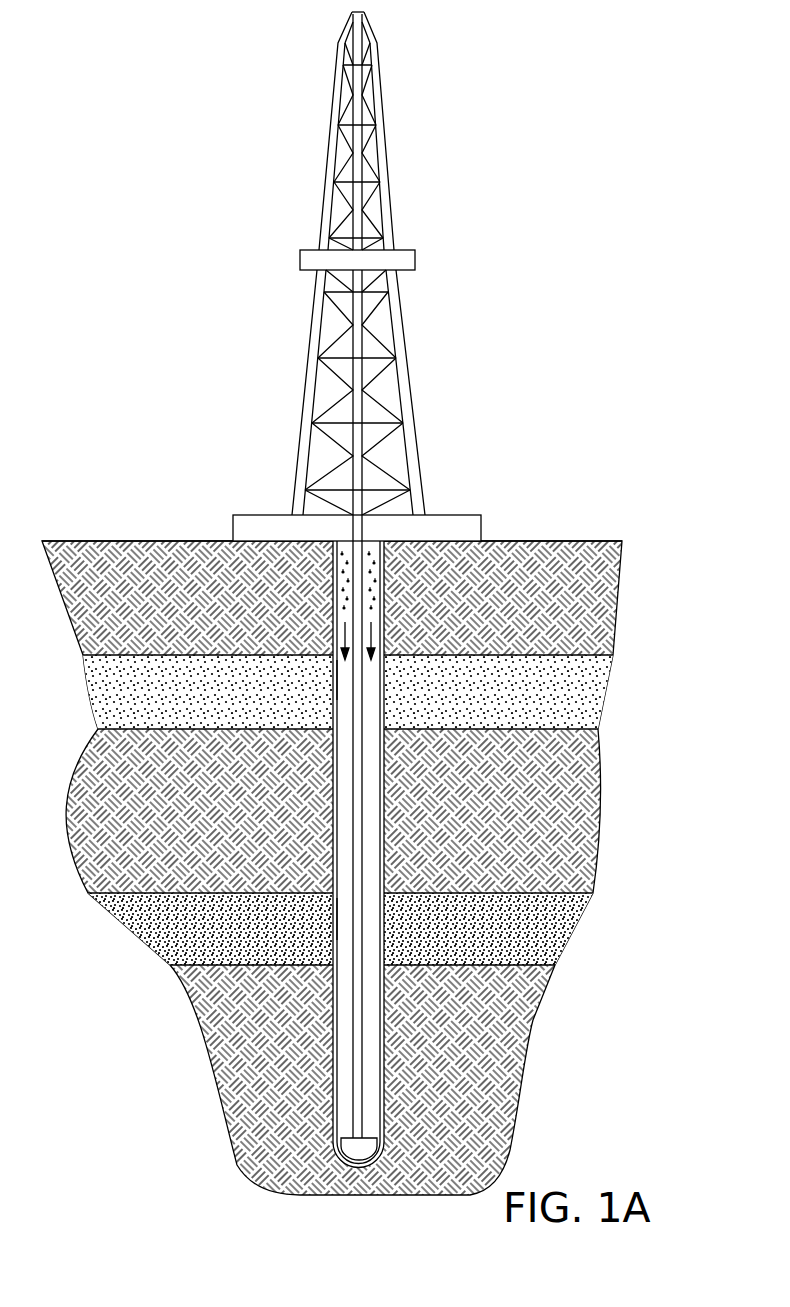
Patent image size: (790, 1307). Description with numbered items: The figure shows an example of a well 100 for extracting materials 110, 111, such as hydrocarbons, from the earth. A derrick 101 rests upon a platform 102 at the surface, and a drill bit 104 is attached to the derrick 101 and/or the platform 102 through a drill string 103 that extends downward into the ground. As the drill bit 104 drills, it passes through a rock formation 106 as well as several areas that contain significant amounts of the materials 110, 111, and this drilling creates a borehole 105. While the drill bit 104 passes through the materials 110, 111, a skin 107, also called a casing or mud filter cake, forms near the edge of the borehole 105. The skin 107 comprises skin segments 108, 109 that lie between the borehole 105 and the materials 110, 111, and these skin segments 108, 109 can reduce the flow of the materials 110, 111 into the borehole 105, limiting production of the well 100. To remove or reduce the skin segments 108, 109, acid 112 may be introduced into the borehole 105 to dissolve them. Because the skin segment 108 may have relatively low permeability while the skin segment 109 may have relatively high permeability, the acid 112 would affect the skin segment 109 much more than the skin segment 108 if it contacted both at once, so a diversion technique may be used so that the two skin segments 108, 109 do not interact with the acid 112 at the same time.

The well 100 is at (198, 184).
The derrick 101 is at (388, 150).
The platform 102 is at (470, 515).
The drill string 103 is at (352, 1038).
The drill bit 104 is at (360, 1163).
The borehole 105 is at (348, 1100).
The rock formation 106 is at (577, 810).
The skin 107 is at (388, 1050).
The skin segment 108 is at (336, 682).
The skin segment 109 is at (336, 920).
The material 110 is at (590, 686).
The material 111 is at (555, 933).
The acid 112 is at (375, 573).